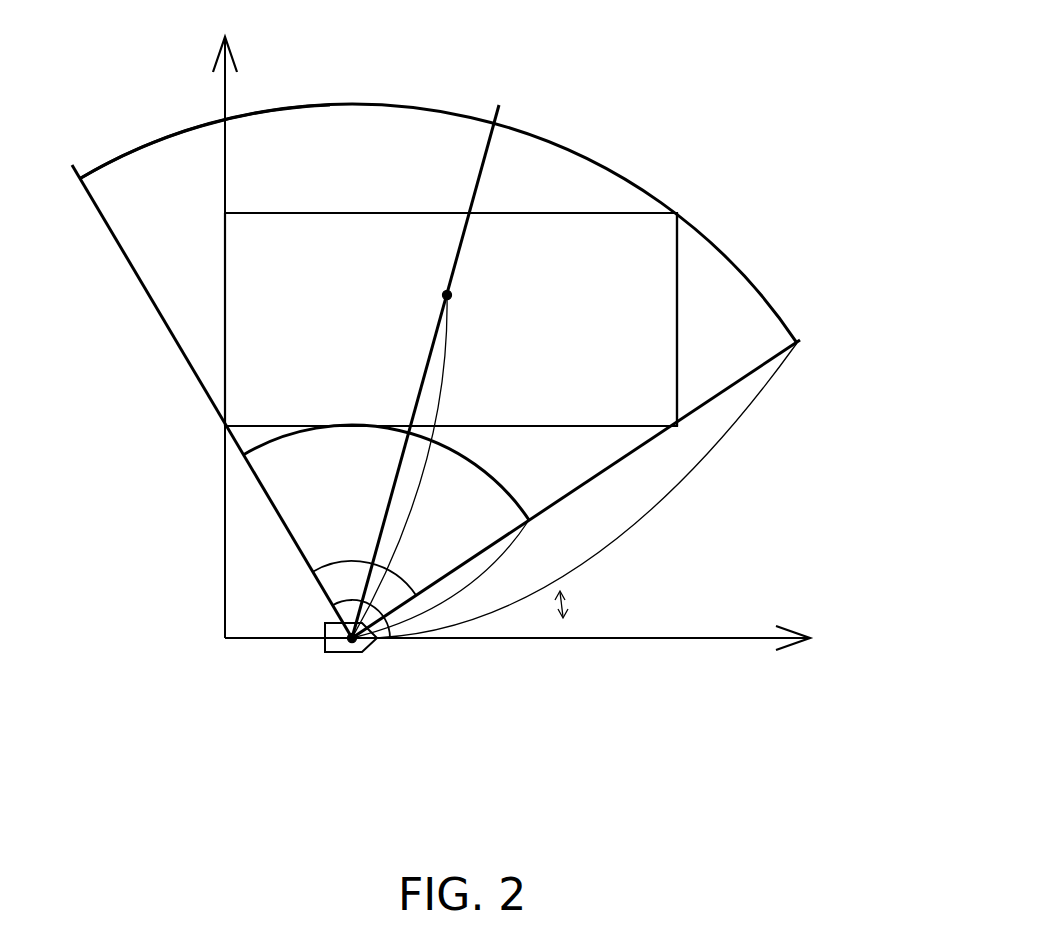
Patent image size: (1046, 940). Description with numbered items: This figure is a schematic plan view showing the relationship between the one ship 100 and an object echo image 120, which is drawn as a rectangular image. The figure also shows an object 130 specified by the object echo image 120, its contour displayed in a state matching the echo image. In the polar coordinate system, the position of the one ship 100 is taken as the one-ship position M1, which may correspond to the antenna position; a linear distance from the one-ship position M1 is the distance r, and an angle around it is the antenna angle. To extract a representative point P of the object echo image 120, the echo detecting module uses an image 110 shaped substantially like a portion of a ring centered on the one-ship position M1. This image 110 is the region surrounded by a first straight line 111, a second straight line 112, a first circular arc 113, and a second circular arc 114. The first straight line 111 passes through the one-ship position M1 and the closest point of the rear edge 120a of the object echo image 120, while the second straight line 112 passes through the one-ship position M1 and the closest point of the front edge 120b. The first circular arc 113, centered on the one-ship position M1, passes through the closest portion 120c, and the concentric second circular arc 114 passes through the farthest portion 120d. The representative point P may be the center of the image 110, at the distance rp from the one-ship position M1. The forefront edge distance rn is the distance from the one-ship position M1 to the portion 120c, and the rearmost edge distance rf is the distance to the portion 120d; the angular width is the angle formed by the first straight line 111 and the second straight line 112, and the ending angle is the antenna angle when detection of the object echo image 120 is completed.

The one ship 100 is at (338, 653).
The one-ship position M1 is at (356, 650).
The image having a shape substantially of a portion of a ring 110 is at (305, 105).
The first straight line 111 is at (118, 249).
The second straight line 112 is at (798, 342).
The first circular arc 113 is at (273, 443).
The second circular arc 114 is at (127, 153).
The object echo image 120 is at (556, 213).
The rear edge 120a is at (222, 427).
The front edge 120b is at (675, 427).
The closest portion 120c is at (345, 428).
The farthest portion 120d is at (677, 213).
The object 130 is at (620, 213).
The representative point P is at (447, 292).
The distance r is at (427, 353).
The distance to representative point rp is at (442, 380).
The forefront edge distance rn is at (440, 579).
The rearmost edge distance rf is at (574, 490).